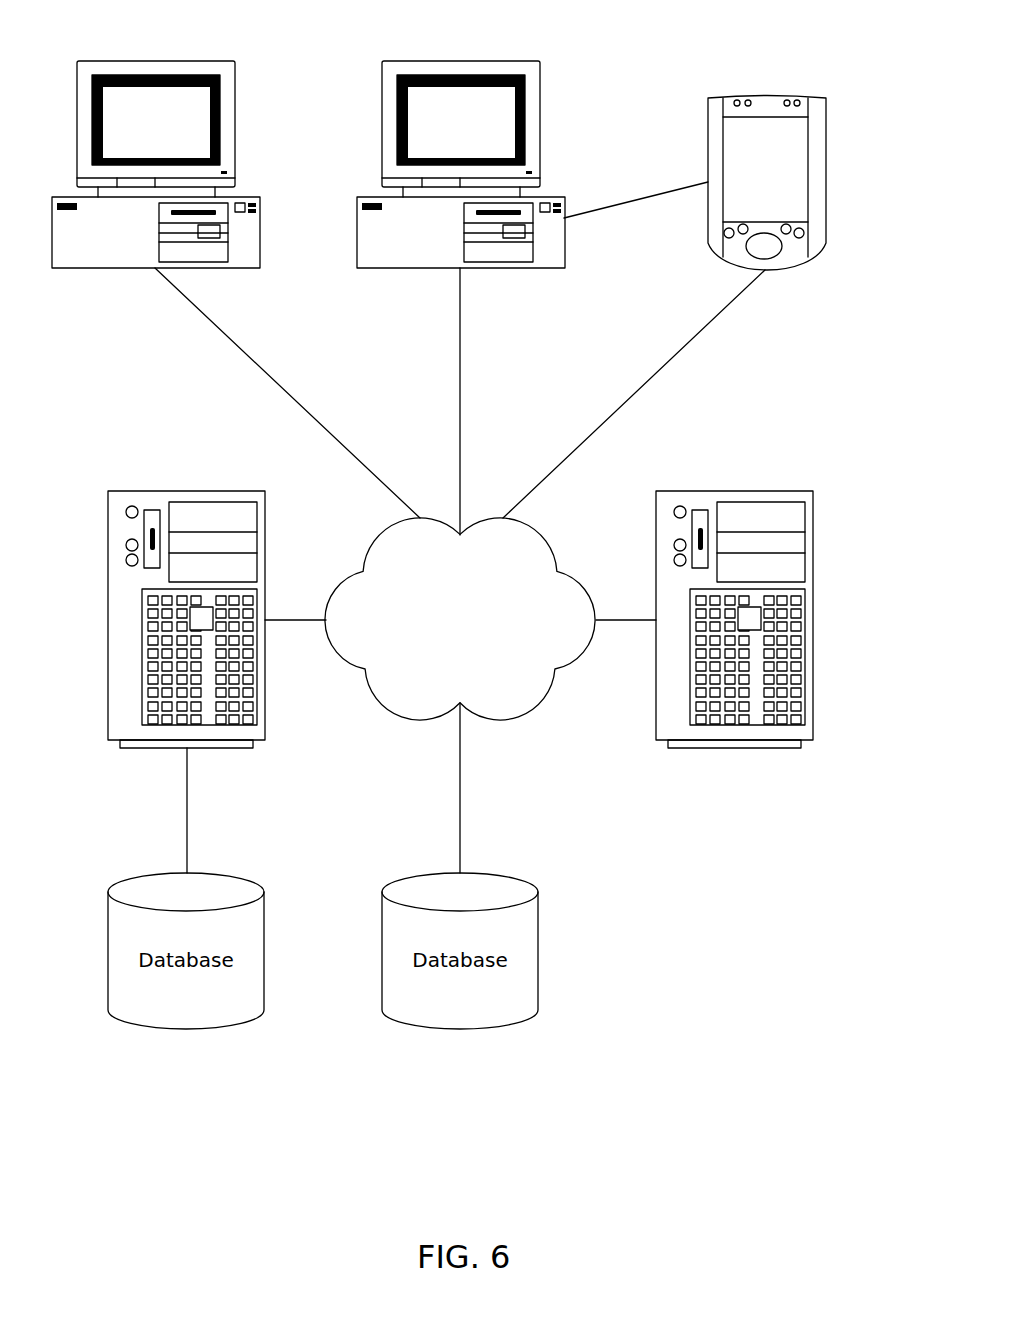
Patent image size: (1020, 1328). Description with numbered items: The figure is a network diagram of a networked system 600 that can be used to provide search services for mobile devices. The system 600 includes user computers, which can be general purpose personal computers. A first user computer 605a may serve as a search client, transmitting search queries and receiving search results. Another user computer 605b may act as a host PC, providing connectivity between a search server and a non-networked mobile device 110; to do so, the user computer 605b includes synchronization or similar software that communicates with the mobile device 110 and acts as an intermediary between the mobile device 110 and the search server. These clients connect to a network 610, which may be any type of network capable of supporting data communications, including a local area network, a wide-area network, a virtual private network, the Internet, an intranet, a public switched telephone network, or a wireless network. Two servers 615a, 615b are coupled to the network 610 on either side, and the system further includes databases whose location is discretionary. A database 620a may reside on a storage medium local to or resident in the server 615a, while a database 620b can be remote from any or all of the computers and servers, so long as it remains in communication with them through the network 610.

The first user computer 605a is at (260, 215).
The user computer 605b is at (356, 215).
The mobile device 110 is at (826, 183).
The server 615a is at (108, 620).
The server 615b is at (813, 620).
The network 610 is at (498, 718).
The database 620a is at (186, 1028).
The database 620b is at (460, 1028).
The networked system 600 is at (724, 1084).